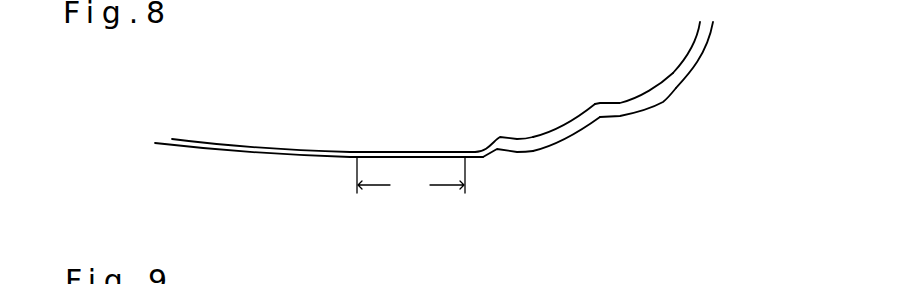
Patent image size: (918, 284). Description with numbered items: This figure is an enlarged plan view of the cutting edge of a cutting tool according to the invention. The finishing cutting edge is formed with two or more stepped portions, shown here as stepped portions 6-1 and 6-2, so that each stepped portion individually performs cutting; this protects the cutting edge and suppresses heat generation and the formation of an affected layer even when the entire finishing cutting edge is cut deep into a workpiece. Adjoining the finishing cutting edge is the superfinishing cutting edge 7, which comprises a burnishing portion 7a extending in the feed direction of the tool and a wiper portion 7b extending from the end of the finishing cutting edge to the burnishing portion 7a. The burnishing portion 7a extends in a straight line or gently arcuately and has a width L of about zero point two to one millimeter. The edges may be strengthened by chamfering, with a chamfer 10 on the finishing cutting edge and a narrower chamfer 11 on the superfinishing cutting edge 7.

The chamfer 10 is at (690, 55).
The stepped portion 6-1 is at (662, 102).
The stepped portion 6-2 is at (560, 147).
The superfinishing cutting edge 7 is at (441, 208).
The burnishing portion 7a is at (398, 160).
The wiper portion 7b is at (504, 188).
The chamfer 11 is at (273, 150).